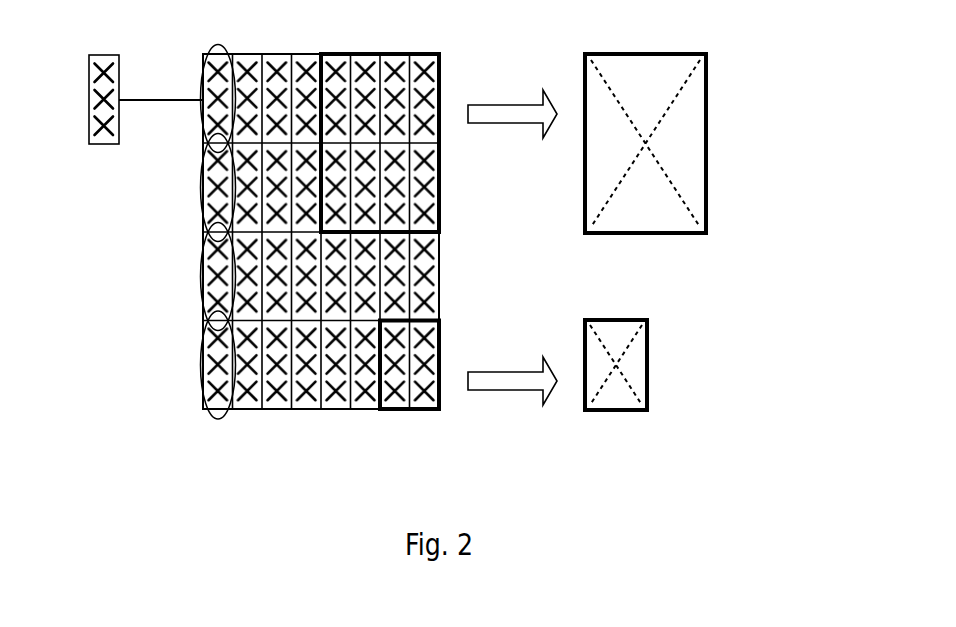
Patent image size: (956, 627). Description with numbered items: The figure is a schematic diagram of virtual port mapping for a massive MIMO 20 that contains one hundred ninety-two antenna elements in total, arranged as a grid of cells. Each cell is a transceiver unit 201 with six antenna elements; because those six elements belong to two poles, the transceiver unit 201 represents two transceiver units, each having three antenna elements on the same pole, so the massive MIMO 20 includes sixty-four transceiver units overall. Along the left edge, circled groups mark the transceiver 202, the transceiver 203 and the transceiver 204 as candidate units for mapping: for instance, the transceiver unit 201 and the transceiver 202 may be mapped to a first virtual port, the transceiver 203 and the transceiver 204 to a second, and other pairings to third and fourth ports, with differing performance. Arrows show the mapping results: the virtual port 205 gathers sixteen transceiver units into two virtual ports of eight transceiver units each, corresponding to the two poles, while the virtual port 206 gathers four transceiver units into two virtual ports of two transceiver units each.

The massive MIMO 20 is at (327, 413).
The transceiver unit 201 is at (97, 148).
The transceiver 202 is at (207, 170).
The transceiver 203 is at (208, 265).
The transceiver 204 is at (210, 353).
The virtual port 205 is at (705, 235).
The virtual port 206 is at (588, 412).